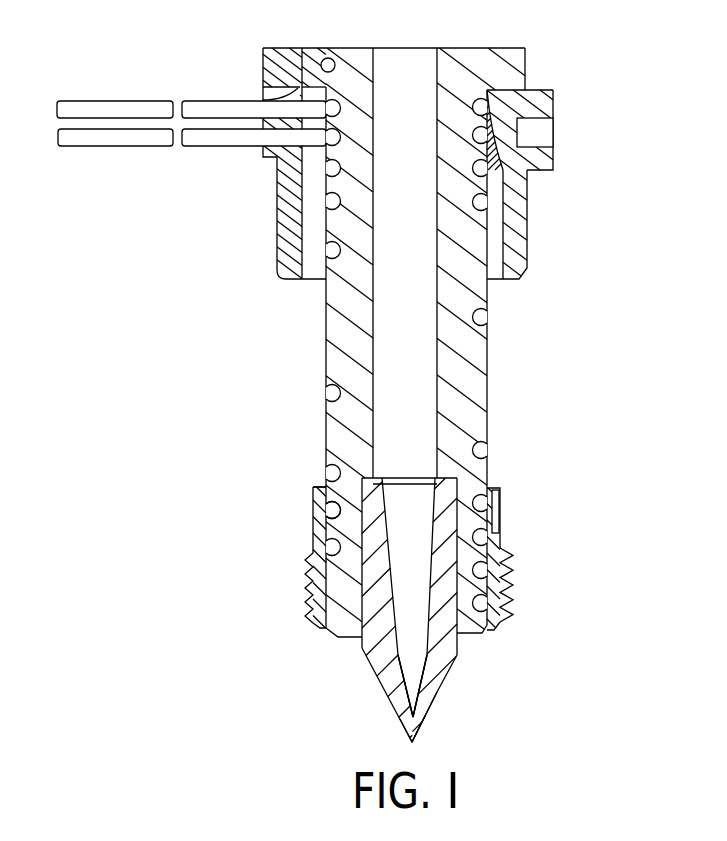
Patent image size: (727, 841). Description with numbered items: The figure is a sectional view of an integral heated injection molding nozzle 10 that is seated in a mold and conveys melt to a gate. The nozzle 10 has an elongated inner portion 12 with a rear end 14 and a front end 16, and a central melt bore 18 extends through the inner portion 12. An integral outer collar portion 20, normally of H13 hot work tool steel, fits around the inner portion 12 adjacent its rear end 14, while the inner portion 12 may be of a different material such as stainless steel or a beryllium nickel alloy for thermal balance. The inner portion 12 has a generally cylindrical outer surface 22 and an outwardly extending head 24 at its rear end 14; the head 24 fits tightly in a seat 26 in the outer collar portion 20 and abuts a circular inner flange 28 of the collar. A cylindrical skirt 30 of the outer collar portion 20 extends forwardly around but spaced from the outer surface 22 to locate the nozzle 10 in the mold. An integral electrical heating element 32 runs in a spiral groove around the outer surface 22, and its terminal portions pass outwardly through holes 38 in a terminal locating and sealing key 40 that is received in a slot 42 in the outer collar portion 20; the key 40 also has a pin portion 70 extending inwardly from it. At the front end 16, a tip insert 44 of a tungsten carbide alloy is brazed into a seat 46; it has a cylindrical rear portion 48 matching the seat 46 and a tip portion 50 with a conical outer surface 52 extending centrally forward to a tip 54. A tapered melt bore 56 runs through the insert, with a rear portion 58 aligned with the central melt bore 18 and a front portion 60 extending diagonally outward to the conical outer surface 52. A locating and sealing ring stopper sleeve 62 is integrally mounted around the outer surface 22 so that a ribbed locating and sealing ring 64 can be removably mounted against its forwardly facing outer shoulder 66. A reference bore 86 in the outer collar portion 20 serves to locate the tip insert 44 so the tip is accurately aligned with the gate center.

The nozzle 10 is at (530, 366).
The elongated inner portion 12 is at (465, 420).
The rear end 14 is at (457, 47).
The front end 16 is at (470, 640).
The central melt bore 18 is at (403, 333).
The outer collar portion 20 is at (532, 107).
The outer surface 22 is at (323, 357).
The head 24 is at (523, 58).
The seat 26 is at (487, 86).
The circular inner flange 28 is at (482, 92).
The cylindrical skirt 30 is at (518, 247).
The electrical heating element 32 is at (107, 115).
The holes 38 is at (265, 100).
The terminal locating and sealing key 40 is at (270, 72).
The slot 42 is at (298, 82).
The tip insert 44 is at (368, 662).
The seat 46 is at (505, 535).
The rear portion 48 is at (443, 495).
The tip portion 50 is at (390, 682).
The conical outer surface 52 is at (400, 715).
The tip 54 is at (413, 740).
The tapered melt bore 56 is at (408, 623).
The rear portion of melt bore 58 is at (412, 572).
The front portion of melt bore 60 is at (427, 683).
The locating and sealing ring stopper sleeve 62 is at (324, 512).
The ribbed locating and sealing ring 64 is at (310, 590).
The forwardly facing outer shoulder 66 is at (310, 555).
The pin portion 70 is at (329, 58).
The reference bore 86 is at (540, 133).